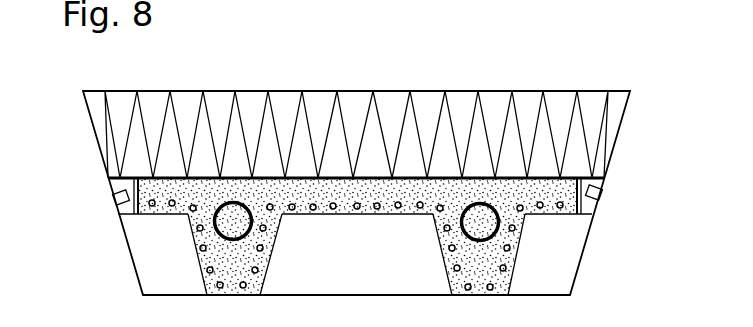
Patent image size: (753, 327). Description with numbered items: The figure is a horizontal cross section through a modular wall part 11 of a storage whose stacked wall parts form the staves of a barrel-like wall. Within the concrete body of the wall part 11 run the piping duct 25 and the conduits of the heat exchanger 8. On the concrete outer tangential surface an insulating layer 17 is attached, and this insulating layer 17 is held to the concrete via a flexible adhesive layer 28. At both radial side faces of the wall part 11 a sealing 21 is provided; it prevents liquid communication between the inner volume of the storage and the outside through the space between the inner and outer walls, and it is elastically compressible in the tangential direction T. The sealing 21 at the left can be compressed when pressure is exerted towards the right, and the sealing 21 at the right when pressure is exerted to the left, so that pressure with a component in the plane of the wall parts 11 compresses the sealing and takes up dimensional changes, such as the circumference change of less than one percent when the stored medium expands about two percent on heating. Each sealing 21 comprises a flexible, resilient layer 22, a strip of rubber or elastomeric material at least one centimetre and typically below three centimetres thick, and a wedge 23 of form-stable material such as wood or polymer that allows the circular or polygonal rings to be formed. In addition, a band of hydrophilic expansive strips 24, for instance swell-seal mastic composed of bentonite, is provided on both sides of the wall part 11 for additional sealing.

The heat exchanger 8 is at (449, 272).
The modular wall part 11 is at (396, 86).
The insulating layer 17 is at (282, 135).
The sealing 21 is at (90, 190).
The flexible, resilient layer 22 is at (140, 177).
The wedge 23 is at (115, 180).
The hydrophilic expansive strips 24 is at (113, 205).
The piping duct 25 is at (233, 221).
The flexible adhesive layer 28 is at (436, 162).
The tangential direction T is at (321, 88).